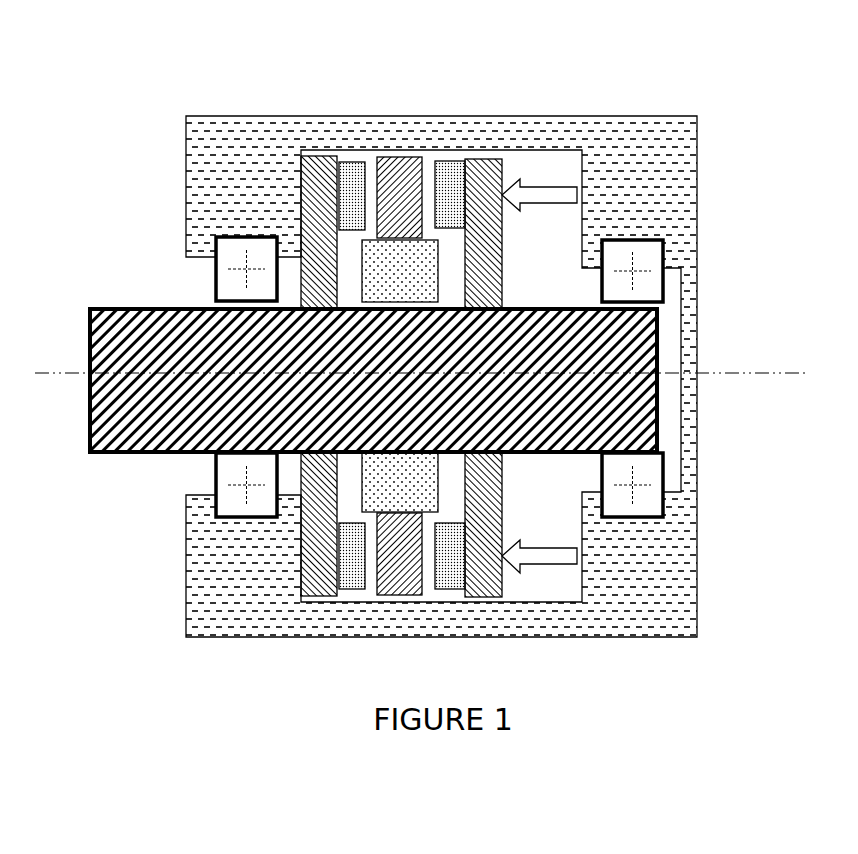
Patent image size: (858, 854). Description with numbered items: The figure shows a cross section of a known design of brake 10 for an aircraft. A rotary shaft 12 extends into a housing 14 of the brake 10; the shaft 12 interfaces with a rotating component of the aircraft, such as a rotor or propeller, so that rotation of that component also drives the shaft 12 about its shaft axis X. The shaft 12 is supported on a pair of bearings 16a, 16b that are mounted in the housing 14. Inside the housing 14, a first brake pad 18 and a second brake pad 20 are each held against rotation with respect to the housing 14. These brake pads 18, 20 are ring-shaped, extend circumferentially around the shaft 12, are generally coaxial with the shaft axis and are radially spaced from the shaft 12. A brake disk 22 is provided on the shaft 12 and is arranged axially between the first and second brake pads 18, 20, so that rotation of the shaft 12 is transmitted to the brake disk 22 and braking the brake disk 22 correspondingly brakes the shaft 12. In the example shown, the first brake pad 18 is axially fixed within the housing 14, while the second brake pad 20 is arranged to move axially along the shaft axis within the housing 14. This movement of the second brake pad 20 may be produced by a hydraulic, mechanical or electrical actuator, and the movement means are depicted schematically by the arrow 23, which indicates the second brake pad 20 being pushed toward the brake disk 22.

The brake 10 is at (438, 379).
The rotary shaft 12 is at (138, 347).
The housing 14 is at (623, 147).
The bearing 16a is at (245, 485).
The bearing 16b is at (638, 489).
The first brake pad 18 is at (318, 180).
The second brake pad 20 is at (483, 177).
The brake disk 22 is at (398, 182).
The arrow 23 is at (547, 556).